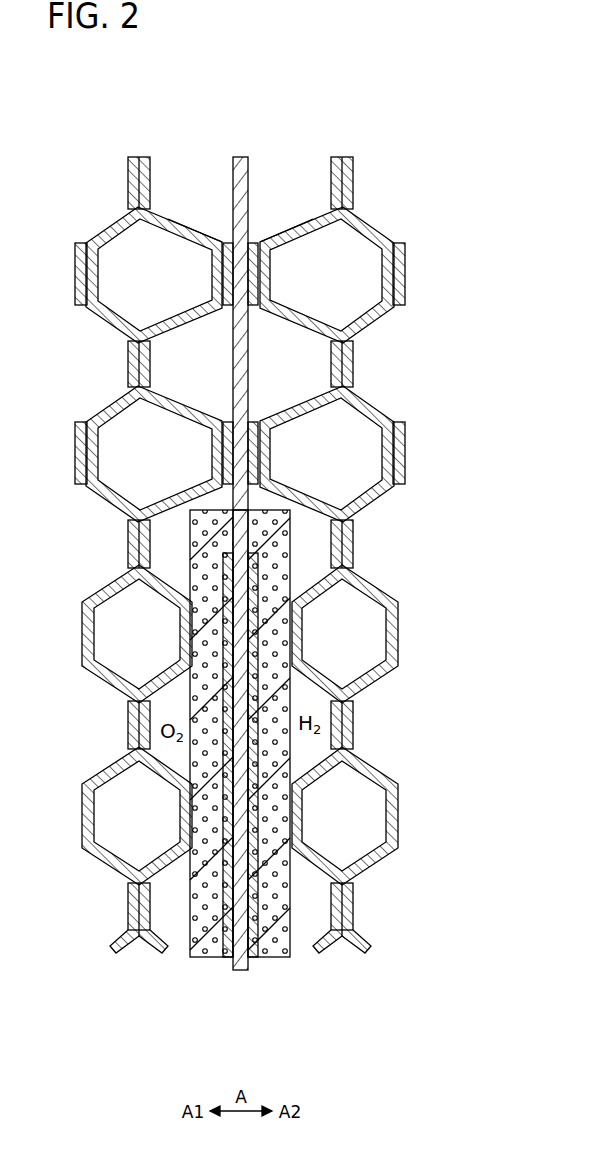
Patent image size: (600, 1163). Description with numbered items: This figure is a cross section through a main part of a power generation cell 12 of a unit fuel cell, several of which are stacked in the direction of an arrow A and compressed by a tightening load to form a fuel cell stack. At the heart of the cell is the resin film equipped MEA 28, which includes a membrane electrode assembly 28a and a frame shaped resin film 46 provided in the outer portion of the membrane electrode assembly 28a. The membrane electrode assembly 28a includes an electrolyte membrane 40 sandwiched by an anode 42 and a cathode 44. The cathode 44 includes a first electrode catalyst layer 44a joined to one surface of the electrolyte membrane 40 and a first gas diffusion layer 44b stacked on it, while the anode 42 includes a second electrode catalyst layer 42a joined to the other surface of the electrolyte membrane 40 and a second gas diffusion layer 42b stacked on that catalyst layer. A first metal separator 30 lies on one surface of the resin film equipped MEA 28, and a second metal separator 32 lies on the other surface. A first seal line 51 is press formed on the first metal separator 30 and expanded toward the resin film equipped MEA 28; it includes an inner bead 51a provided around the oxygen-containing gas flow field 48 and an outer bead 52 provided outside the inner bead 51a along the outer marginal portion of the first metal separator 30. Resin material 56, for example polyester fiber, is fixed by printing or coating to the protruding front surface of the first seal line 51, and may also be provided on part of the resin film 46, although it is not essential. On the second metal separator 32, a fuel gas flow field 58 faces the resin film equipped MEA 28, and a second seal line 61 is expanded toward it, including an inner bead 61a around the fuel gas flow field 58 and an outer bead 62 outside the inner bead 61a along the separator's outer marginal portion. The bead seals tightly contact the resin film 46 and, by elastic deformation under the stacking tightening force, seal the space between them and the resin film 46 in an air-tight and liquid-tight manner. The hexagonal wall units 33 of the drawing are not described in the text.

The power generation cell 12 is at (391, 816).
The resin film equipped MEA 28 is at (300, 803).
The membrane electrode assembly 28a is at (221, 789).
The first metal separator 30 is at (170, 213).
The second metal separator 32 is at (271, 497).
The hexagonal wall unit 33 is at (240, 213).
The electrolyte membrane 40 is at (241, 972).
The anode 42 is at (331, 769).
The second electrode catalyst layer 42a is at (258, 570).
The second gas diffusion layer 42b is at (280, 636).
The cathode 44 is at (130, 769).
The first electrode catalyst layer 44a is at (226, 628).
The first gas diffusion layer 44b is at (190, 609).
The resin film 46 is at (242, 157).
The oxygen-containing gas flow field 48 is at (158, 712).
The first seal line 51 is at (184, 219).
The inner bead 51a is at (197, 410).
The outer bead 52 is at (203, 233).
The resin material 56 is at (75, 281).
The fuel gas flow field 58 is at (320, 742).
The second seal line 61 is at (294, 219).
The inner bead 61a is at (285, 410).
The outer bead 62 is at (276, 233).